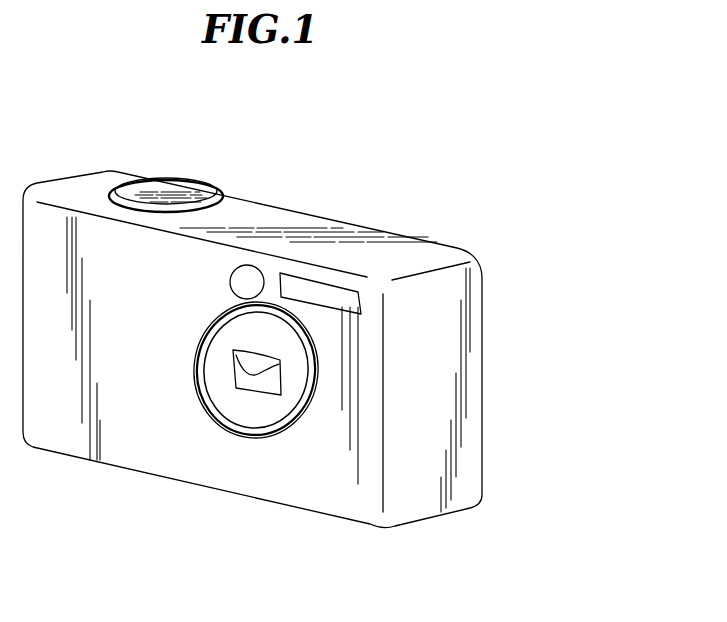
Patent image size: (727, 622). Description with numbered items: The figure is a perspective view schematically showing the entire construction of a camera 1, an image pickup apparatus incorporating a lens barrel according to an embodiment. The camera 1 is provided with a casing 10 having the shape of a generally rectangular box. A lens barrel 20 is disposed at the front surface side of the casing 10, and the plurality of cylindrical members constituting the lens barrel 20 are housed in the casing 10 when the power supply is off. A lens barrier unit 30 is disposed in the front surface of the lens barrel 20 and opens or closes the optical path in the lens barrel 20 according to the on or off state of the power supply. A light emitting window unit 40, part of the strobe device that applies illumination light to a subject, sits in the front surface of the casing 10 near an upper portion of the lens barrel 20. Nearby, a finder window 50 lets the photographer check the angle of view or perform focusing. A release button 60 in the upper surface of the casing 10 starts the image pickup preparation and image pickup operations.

The camera 1 is at (296, 117).
The casing 10 is at (342, 490).
The lens barrel 20 is at (253, 412).
The lens barrier unit 30 is at (242, 377).
The light emitting window unit 40 is at (323, 290).
The finder window 50 is at (249, 265).
The release button 60 is at (176, 186).